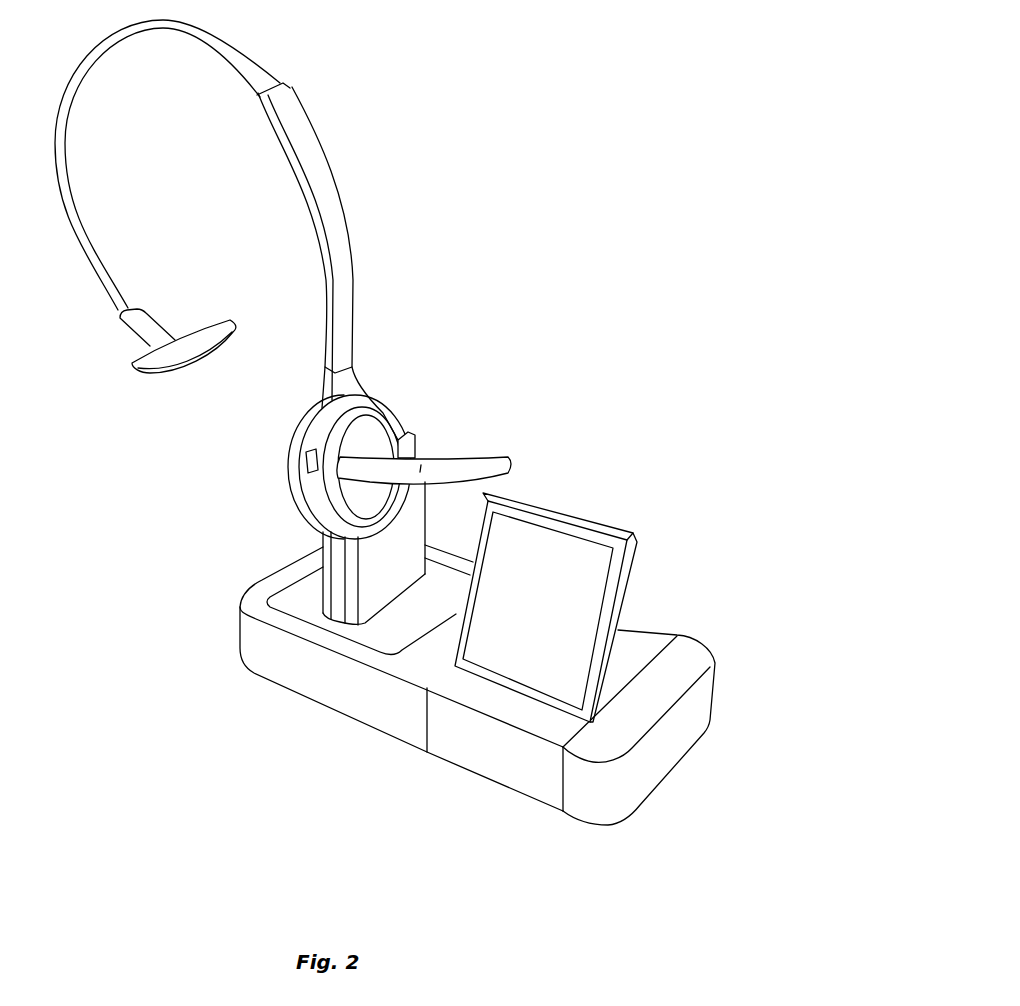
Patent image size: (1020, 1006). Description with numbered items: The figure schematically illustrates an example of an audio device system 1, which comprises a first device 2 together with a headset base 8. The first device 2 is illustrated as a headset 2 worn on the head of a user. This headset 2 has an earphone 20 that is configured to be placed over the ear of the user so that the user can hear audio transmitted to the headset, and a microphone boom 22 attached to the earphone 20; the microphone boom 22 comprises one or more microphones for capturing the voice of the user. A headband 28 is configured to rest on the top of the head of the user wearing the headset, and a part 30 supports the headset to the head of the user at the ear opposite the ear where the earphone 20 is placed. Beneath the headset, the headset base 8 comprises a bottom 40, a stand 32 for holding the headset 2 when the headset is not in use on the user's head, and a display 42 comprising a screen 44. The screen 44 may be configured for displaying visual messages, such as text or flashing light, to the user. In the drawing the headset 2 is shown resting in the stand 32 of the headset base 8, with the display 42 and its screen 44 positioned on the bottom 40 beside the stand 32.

The audio device system 1 is at (677, 33).
The first device (headset) 2 is at (392, 120).
The headset base 8 is at (592, 856).
The earphone 20 is at (383, 437).
The microphone boom 22 is at (464, 417).
The headband 28 is at (222, 42).
The part supporting the headset 30 is at (170, 360).
The stand 32 is at (390, 559).
The bottom 40 is at (363, 702).
The display 42 is at (613, 546).
The screen 44 is at (524, 609).